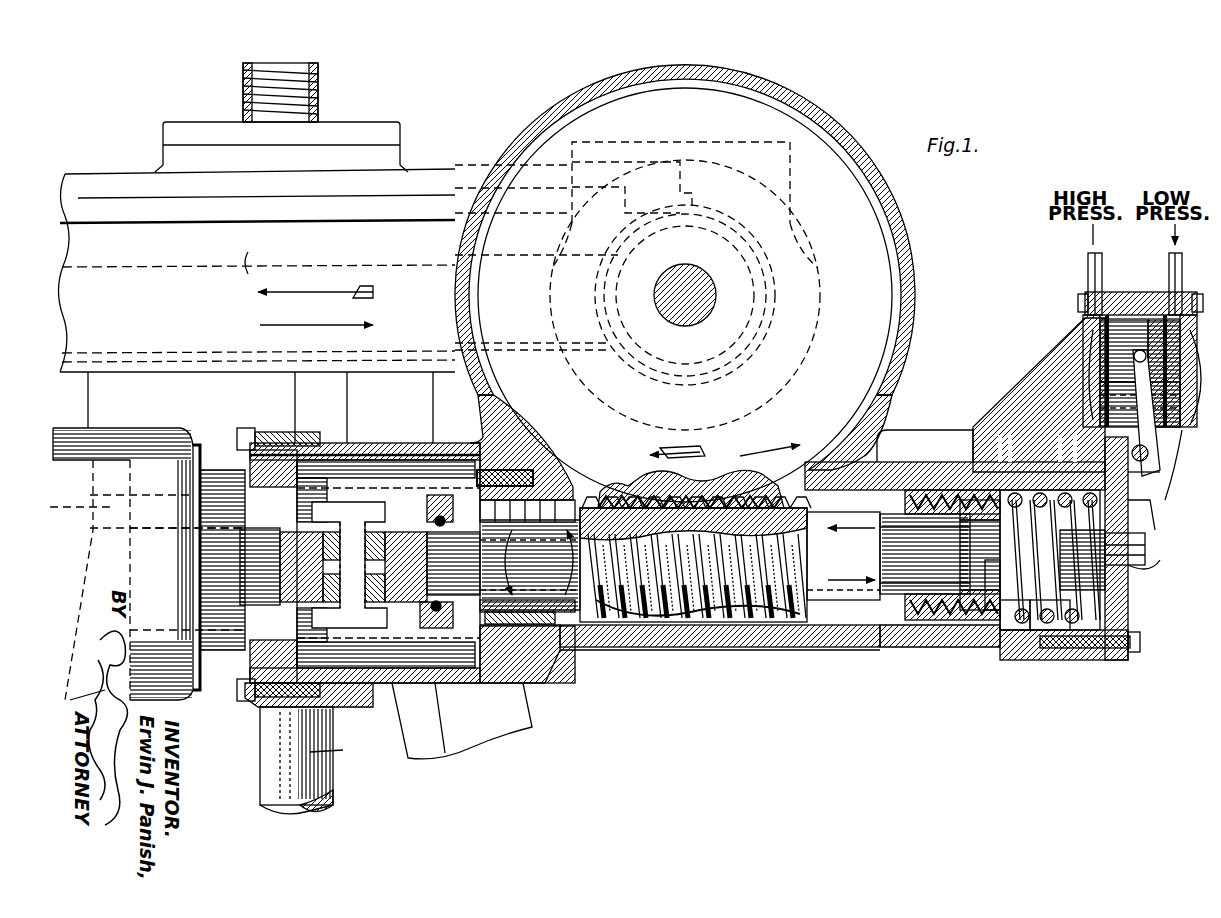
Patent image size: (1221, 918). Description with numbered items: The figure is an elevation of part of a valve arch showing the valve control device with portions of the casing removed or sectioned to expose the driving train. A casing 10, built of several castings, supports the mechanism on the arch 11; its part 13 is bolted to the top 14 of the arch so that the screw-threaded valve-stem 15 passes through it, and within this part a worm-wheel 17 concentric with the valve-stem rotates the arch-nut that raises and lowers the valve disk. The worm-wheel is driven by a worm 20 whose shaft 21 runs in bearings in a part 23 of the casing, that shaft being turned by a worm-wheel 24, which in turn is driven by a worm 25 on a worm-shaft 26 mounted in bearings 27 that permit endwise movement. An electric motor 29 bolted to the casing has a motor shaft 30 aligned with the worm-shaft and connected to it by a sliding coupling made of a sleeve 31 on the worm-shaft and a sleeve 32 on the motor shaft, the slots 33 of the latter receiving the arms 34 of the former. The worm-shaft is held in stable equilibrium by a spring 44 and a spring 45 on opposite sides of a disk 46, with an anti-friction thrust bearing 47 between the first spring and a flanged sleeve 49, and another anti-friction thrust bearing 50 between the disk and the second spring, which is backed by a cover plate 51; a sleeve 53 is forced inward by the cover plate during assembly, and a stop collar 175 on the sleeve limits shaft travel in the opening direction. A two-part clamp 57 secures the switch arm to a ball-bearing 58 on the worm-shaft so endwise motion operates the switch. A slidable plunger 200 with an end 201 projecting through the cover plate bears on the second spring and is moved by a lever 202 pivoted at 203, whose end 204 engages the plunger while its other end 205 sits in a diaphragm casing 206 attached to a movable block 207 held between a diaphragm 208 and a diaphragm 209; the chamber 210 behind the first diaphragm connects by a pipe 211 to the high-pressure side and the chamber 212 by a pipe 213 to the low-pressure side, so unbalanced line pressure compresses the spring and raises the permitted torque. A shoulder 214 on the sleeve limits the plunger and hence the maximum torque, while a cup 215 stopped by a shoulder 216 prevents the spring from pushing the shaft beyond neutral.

The casing 10 is at (257, 247).
The arch 11 is at (462, 721).
The part of the casing 13 is at (260, 407).
The top of the arch 14 is at (145, 511).
The valve-stem 15 is at (238, 95).
The worm-wheel 17 is at (245, 252).
The worm 20 is at (643, 265).
The shaft 21 is at (690, 270).
The part of the casing 23 is at (780, 324).
The worm-wheel 24 is at (685, 283).
The worm 25 is at (625, 500).
The worm-shaft 26 is at (788, 640).
The bearings 27 is at (575, 647).
The electric motor 29 is at (123, 564).
The motor shaft 30 is at (290, 566).
The sleeve 31 is at (405, 520).
The sleeve 32 is at (245, 480).
The slots 33 is at (335, 470).
The arms 34 is at (362, 505).
The spring 44 is at (930, 490).
The spring 45 is at (980, 440).
The disk 46 is at (930, 514).
The anti-friction thrust bearing 47 is at (965, 552).
The sleeve 49 is at (935, 522).
The anti-friction thrust bearing 50 is at (1010, 620).
The cover plate 51 is at (1130, 655).
The sleeve 53 is at (955, 475).
The two-part clamp 57 is at (487, 628).
The ball-bearing 58 is at (449, 616).
The stop collar 175 is at (885, 650).
The slidable plunger 200 is at (1090, 558).
The end of the plunger 201 is at (1150, 525).
The lever 202 is at (1152, 492).
The pivot 203 is at (1160, 480).
The end of the lever 204 is at (1150, 556).
The end of the lever 205 is at (1085, 365).
The diaphragm casing 206 is at (1085, 380).
The head or movable block 207 is at (1143, 325).
The diaphragm 208 is at (1100, 395).
The diaphragm 209 is at (1150, 455).
The chamber 210 is at (1085, 318).
The pipe 211 is at (1087, 272).
The chamber 212 is at (1155, 430).
The pipe 213 is at (1170, 253).
The shoulder or step 214 is at (1045, 635).
The cup 215 is at (1018, 630).
The shoulder or step 216 is at (990, 620).